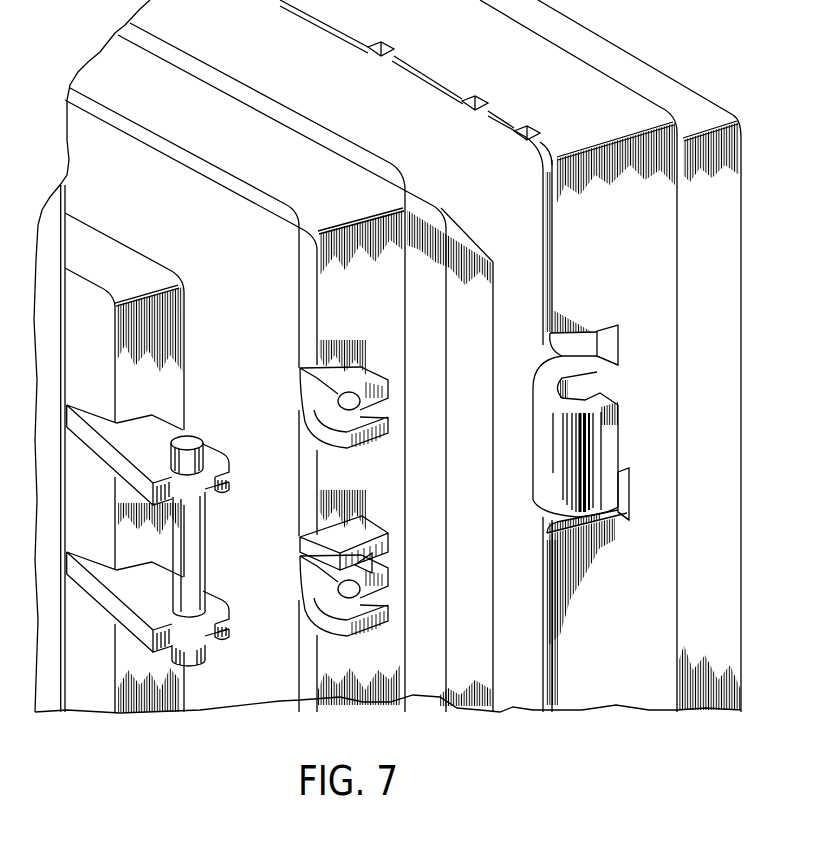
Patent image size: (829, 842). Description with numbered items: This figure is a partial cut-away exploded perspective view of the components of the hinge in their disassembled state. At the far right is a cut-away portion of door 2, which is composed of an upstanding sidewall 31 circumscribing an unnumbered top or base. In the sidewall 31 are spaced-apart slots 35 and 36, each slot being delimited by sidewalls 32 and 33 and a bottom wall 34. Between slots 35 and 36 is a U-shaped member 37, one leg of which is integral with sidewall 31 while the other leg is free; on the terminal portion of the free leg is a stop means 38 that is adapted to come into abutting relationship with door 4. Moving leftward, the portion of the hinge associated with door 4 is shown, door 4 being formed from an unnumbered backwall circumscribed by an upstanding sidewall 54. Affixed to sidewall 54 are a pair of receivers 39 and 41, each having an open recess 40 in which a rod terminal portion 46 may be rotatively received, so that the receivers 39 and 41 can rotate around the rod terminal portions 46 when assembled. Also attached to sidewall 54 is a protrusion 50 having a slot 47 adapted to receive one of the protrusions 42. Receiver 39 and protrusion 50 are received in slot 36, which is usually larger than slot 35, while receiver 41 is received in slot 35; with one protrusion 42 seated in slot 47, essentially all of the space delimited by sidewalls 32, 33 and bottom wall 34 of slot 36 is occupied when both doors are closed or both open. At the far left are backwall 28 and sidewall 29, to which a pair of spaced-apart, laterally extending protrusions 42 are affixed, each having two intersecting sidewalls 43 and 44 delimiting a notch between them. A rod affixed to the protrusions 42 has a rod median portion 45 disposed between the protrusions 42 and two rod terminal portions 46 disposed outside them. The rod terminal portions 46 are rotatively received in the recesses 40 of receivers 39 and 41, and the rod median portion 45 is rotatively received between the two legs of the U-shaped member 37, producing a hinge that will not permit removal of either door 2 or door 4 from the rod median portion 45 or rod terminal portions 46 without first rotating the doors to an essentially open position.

The door 2 is at (742, 522).
The door 4 is at (463, 252).
The backwall 28 is at (97, 380).
The sidewall 29 is at (143, 395).
The upstanding sidewall 31 is at (616, 595).
The sidewall 32 is at (583, 331).
The sidewall 33 is at (605, 373).
The bottom wall 34 is at (620, 342).
The slot 35 is at (584, 349).
The slot 36 is at (547, 518).
The U-shaped member 37 is at (537, 462).
The stop means 38 is at (597, 425).
The receiver 39 is at (327, 600).
The open recess 40 is at (348, 402).
The receiver 41 is at (366, 371).
The protrusion 42 is at (160, 460).
The sidewall 43 is at (172, 495).
The sidewall 44 is at (217, 497).
The rod median portion 45 is at (206, 550).
The rod terminal portion 46 is at (190, 442).
The slot 47 is at (373, 562).
The protrusion 50 is at (367, 527).
The upstanding sidewall 54 is at (310, 195).